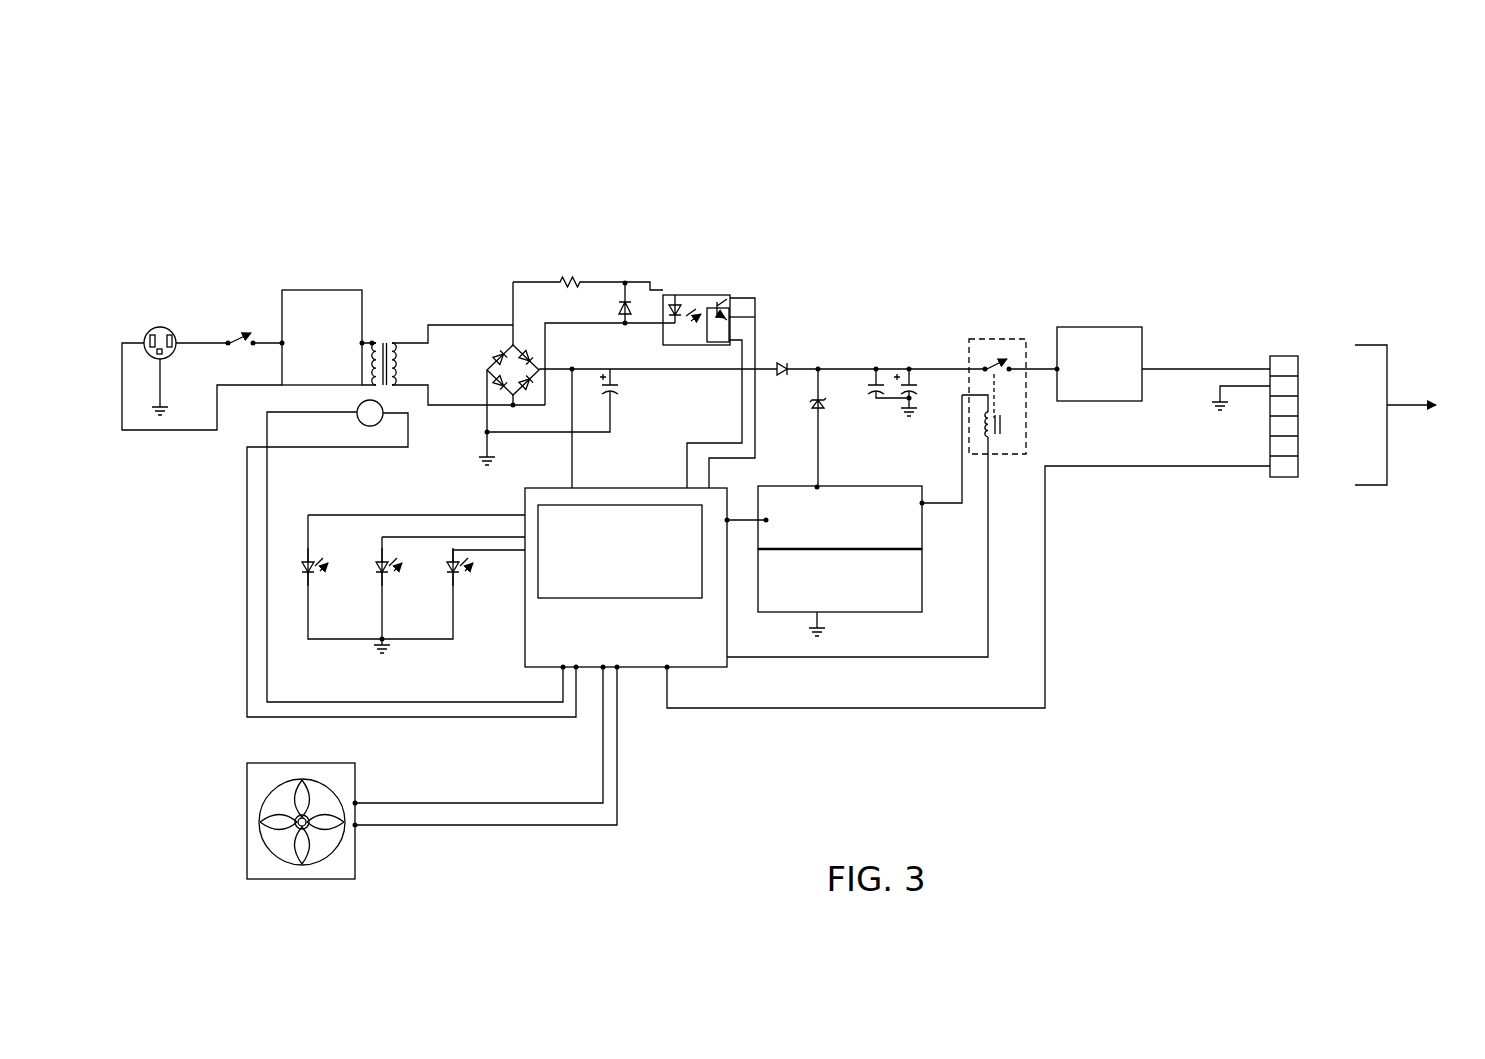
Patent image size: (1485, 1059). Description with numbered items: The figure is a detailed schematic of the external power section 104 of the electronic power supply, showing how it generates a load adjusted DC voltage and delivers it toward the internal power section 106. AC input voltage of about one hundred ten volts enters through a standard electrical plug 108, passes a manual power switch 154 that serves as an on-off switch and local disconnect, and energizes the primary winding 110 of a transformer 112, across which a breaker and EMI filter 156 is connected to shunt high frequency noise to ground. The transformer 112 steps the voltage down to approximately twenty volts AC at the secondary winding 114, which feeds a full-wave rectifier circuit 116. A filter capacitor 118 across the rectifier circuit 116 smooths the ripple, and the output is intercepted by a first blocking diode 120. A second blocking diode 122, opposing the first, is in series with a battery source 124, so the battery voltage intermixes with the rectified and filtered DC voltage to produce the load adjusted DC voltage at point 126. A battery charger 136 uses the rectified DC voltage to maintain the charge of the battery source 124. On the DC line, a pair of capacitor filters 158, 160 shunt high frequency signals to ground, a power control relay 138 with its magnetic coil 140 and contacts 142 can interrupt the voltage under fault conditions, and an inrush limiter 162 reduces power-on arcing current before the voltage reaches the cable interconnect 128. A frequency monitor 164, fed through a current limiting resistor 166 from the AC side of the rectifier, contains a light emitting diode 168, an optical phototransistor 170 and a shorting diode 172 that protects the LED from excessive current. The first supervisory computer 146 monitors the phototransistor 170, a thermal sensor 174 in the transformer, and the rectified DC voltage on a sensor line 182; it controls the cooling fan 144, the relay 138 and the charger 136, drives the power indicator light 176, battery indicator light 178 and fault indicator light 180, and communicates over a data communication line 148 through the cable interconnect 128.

The external power section 104 is at (605, 186).
The internal power section 106 is at (1409, 416).
The standard electrical plug 108 is at (178, 338).
The primary winding 110 is at (372, 340).
The transformer 112 is at (390, 333).
The secondary winding 114 is at (407, 340).
The full-wave rectifier circuit 116 is at (511, 343).
The filter capacitor 118 is at (620, 389).
The first blocking diode 120 is at (780, 359).
The second blocking diode 122 is at (826, 407).
The battery source 124 is at (922, 520).
The load adjusted DC voltage point 126 is at (848, 362).
The cable interconnect 128 is at (1292, 330).
The battery charger 136 is at (922, 578).
The power control relay 138 is at (903, 471).
The magnetic coil 140 is at (1004, 424).
The contacts 142 is at (1006, 352).
The cooling fan 144 is at (357, 783).
The first supervisory computer 146 is at (619, 503).
The data communication line 148 is at (1048, 630).
The manual power switch 154 is at (232, 338).
The breaker and EMI filter 156 is at (308, 290).
The capacitor filter 158 is at (879, 376).
The capacitor filter 160 is at (918, 389).
The inrush limiter 162 is at (1130, 326).
The frequency monitor 164 is at (703, 357).
The current limiting resistor 166 is at (570, 280).
The light emitting diode 168 is at (677, 296).
The optical phototransistor 170 is at (722, 304).
The shorting diode 172 is at (622, 280).
The thermal sensor 174 is at (358, 423).
The power indicator light 176 is at (457, 556).
The battery indicator light 178 is at (387, 556).
The fault indicator light 180 is at (300, 569).
The sensor line 182 is at (571, 466).